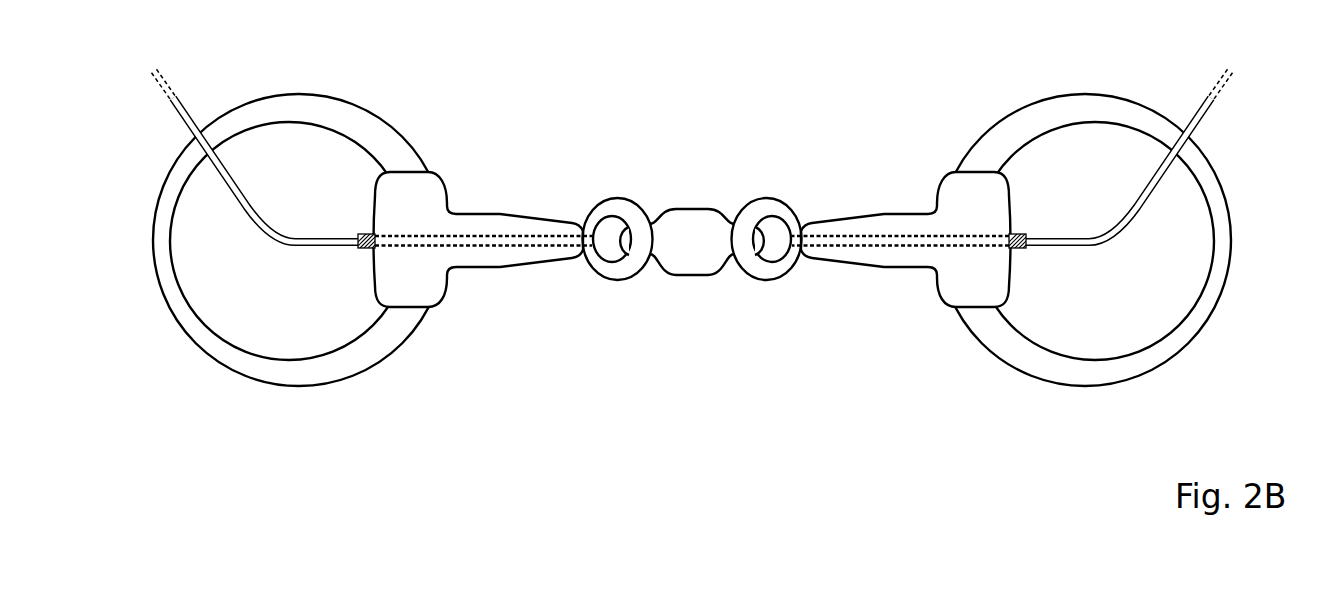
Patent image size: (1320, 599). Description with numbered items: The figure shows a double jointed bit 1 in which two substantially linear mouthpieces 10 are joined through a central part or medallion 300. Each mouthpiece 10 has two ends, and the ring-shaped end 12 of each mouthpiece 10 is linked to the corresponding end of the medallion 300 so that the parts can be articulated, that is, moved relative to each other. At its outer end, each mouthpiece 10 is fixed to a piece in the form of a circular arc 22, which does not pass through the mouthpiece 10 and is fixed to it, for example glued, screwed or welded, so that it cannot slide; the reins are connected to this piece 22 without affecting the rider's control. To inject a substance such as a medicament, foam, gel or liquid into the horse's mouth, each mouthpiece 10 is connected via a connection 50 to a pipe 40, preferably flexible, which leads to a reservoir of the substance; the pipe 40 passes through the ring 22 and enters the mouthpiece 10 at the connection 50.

The bit 1 is at (440, 30).
The mouthpiece 10 is at (438, 273).
The ring-shaped end of mouthpiece 12 is at (614, 271).
The piece in the form of a circular arc 22 is at (175, 307).
The pipe 40 is at (283, 241).
The connection 50 is at (359, 234).
The central part or medallion 300 is at (691, 221).